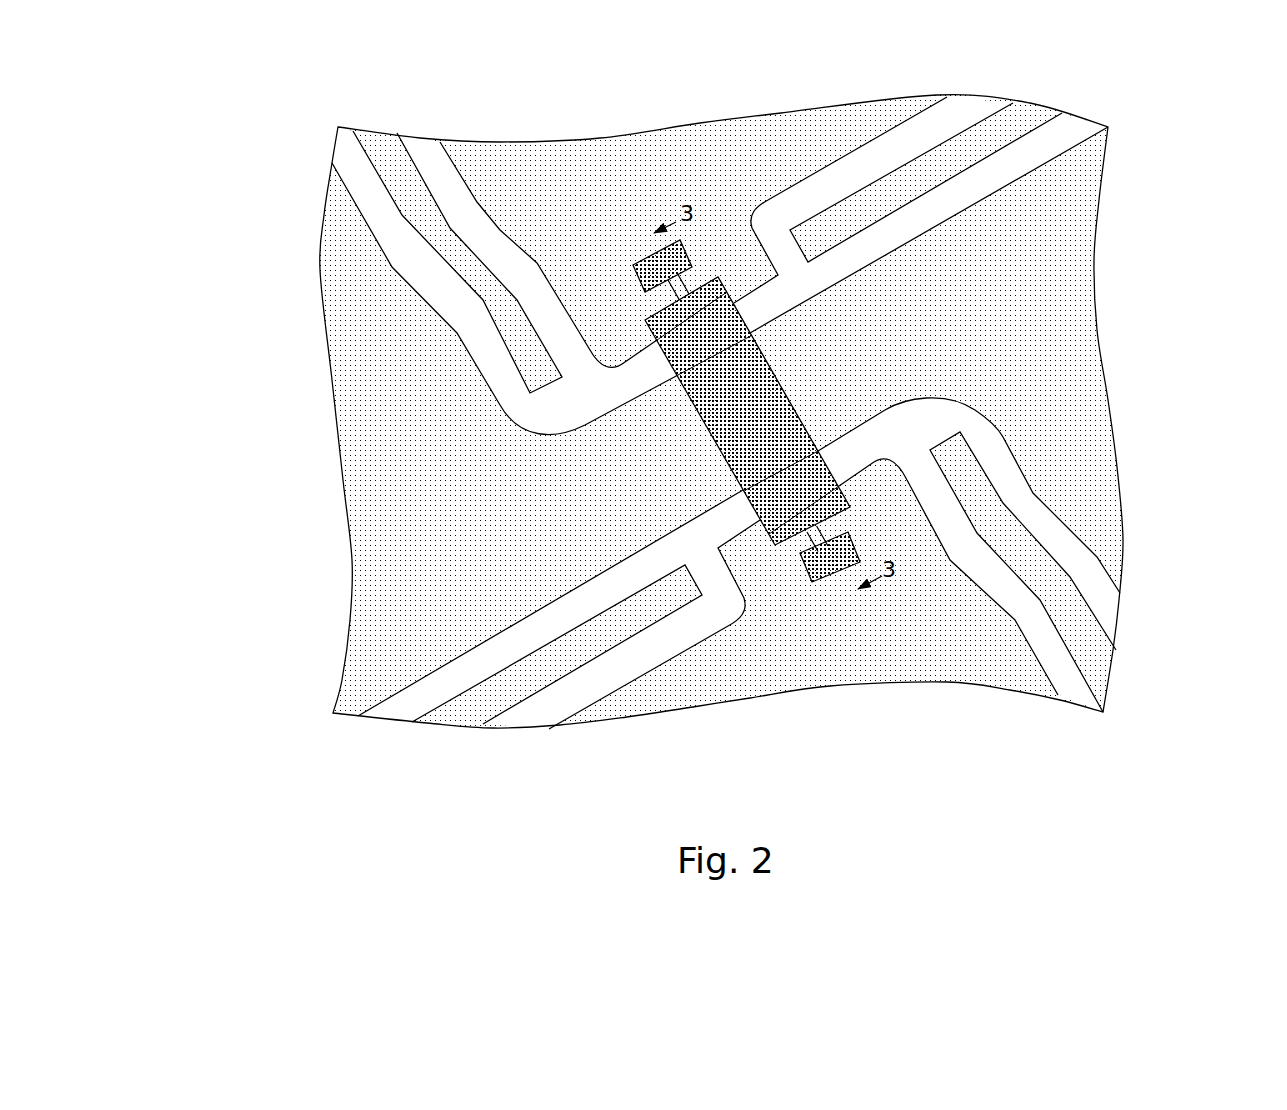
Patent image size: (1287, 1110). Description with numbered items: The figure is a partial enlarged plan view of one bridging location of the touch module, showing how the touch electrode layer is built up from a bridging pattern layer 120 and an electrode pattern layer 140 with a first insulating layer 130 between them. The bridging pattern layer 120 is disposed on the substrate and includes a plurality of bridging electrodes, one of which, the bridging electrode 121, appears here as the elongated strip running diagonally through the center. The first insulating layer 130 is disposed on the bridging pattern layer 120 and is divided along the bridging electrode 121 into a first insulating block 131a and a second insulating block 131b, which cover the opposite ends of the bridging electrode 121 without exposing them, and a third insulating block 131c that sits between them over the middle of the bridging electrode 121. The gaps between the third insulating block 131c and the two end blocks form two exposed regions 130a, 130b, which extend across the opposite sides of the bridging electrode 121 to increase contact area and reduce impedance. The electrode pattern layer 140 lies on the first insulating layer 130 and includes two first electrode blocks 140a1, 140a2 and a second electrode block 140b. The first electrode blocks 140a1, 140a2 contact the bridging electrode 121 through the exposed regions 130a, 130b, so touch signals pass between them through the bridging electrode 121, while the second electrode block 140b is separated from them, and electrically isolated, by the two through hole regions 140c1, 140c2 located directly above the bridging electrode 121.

The bridging pattern layer 120 is at (798, 411).
The bridging electrode 121 is at (743, 392).
The first insulating layer 130 is at (183, 622).
The exposed region 130a is at (606, 175).
The exposed region 130b is at (894, 651).
The first insulating block 131a is at (642, 301).
The second insulating block 131b is at (826, 588).
The third insulating block 131c is at (750, 358).
The electrode pattern layer 140 is at (183, 724).
The first electrode block 140a1 is at (688, 145).
The first electrode block 140a2 is at (804, 680).
The second electrode block 140b is at (1080, 322).
The through hole region 140c1 is at (760, 290).
The through hole region 140c2 is at (738, 534).